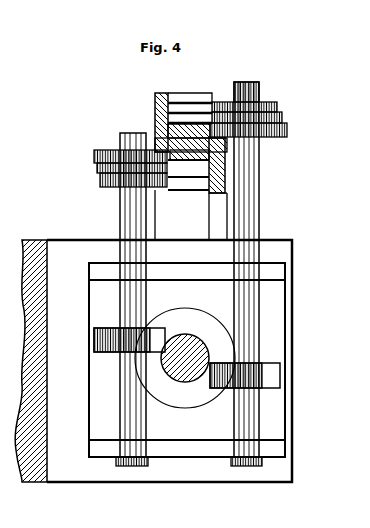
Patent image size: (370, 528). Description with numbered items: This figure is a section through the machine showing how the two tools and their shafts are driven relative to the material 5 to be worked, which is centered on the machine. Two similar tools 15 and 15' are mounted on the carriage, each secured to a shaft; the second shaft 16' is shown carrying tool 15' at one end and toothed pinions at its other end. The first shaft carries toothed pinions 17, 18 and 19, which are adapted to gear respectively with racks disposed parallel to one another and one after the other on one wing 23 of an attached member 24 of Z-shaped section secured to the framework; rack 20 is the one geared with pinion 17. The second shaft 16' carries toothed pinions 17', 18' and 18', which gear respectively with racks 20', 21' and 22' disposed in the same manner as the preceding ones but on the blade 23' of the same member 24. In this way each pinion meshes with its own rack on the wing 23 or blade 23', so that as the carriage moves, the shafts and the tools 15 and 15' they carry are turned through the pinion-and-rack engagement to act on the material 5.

The material 5 is at (185, 360).
The tool 15 is at (277, 358).
The tool 15' is at (109, 363).
The shaft 16' is at (183, 274).
The toothed pinion 17 is at (271, 143).
The toothed pinion 17' is at (93, 171).
The toothed pinion 18 is at (272, 120).
The toothed pinion 18' is at (96, 151).
The toothed pinion 19 is at (96, 156).
The rack 20 is at (158, 120).
The rack 20' is at (179, 187).
The rack 21' is at (159, 163).
The rack 22' is at (211, 147).
The wing 23 is at (191, 155).
The blade 23' is at (209, 227).
The attached member 24 is at (253, 86).